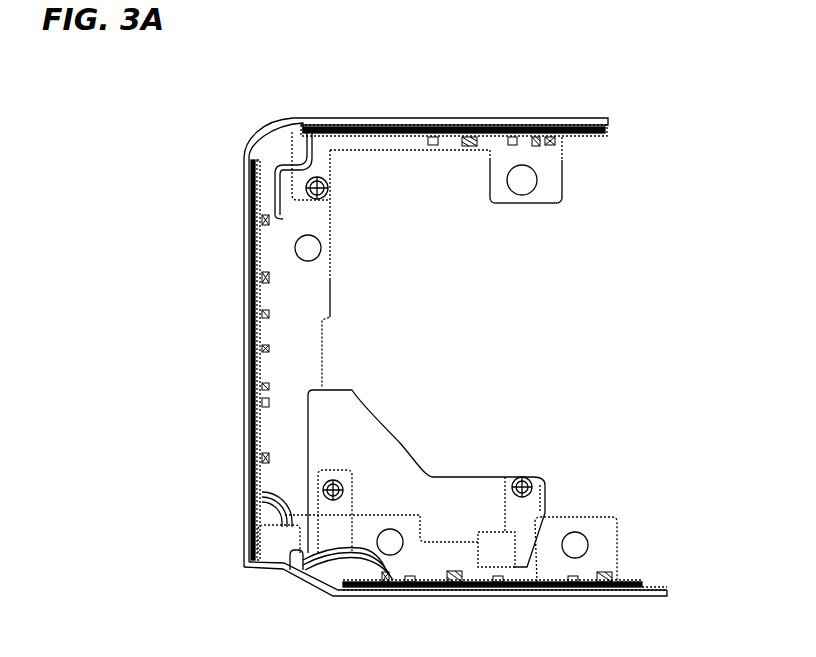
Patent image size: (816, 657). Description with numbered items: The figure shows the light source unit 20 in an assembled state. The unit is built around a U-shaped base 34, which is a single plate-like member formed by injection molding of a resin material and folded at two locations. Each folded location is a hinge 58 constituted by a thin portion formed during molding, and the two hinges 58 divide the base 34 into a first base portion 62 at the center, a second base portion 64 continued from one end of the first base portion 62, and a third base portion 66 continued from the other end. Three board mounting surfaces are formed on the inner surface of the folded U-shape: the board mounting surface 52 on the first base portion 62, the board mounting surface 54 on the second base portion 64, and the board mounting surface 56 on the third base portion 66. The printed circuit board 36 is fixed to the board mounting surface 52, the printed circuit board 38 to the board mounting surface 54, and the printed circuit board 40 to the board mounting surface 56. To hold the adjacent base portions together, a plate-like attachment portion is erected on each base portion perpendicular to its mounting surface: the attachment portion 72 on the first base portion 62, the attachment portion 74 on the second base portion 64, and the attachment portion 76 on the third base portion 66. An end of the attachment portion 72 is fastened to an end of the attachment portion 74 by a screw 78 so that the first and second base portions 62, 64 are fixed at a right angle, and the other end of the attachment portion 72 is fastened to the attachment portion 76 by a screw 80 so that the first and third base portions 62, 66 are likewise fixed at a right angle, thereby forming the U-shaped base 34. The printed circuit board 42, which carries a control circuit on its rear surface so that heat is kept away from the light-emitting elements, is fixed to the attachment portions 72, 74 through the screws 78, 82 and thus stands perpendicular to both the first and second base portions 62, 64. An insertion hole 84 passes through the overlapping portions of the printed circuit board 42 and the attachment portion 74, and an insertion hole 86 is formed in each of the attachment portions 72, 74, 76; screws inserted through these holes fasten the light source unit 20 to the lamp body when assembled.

The light source unit 20 is at (634, 143).
The U-shaped base 34 is at (238, 180).
The printed circuit board 36 is at (260, 335).
The printed circuit board 38 is at (560, 580).
The printed circuit board 40 is at (488, 137).
The printed circuit board 42 is at (443, 476).
The board mounting surface 52 is at (262, 373).
The board mounting surface 54 is at (628, 583).
The board mounting surface 56 is at (452, 137).
The hinge 58 is at (252, 150).
The first base portion 62 is at (242, 342).
The second base portion 64 is at (472, 600).
The third base portion 66 is at (418, 117).
The attachment portion 72 is at (330, 300).
The attachment portion 74 is at (582, 517).
The attachment portion 76 is at (508, 205).
The screw 78 is at (342, 478).
The screw 80 is at (330, 190).
The screw 82 is at (525, 480).
The insertion hole 84 is at (393, 552).
The insertion hole 86 is at (321, 249).